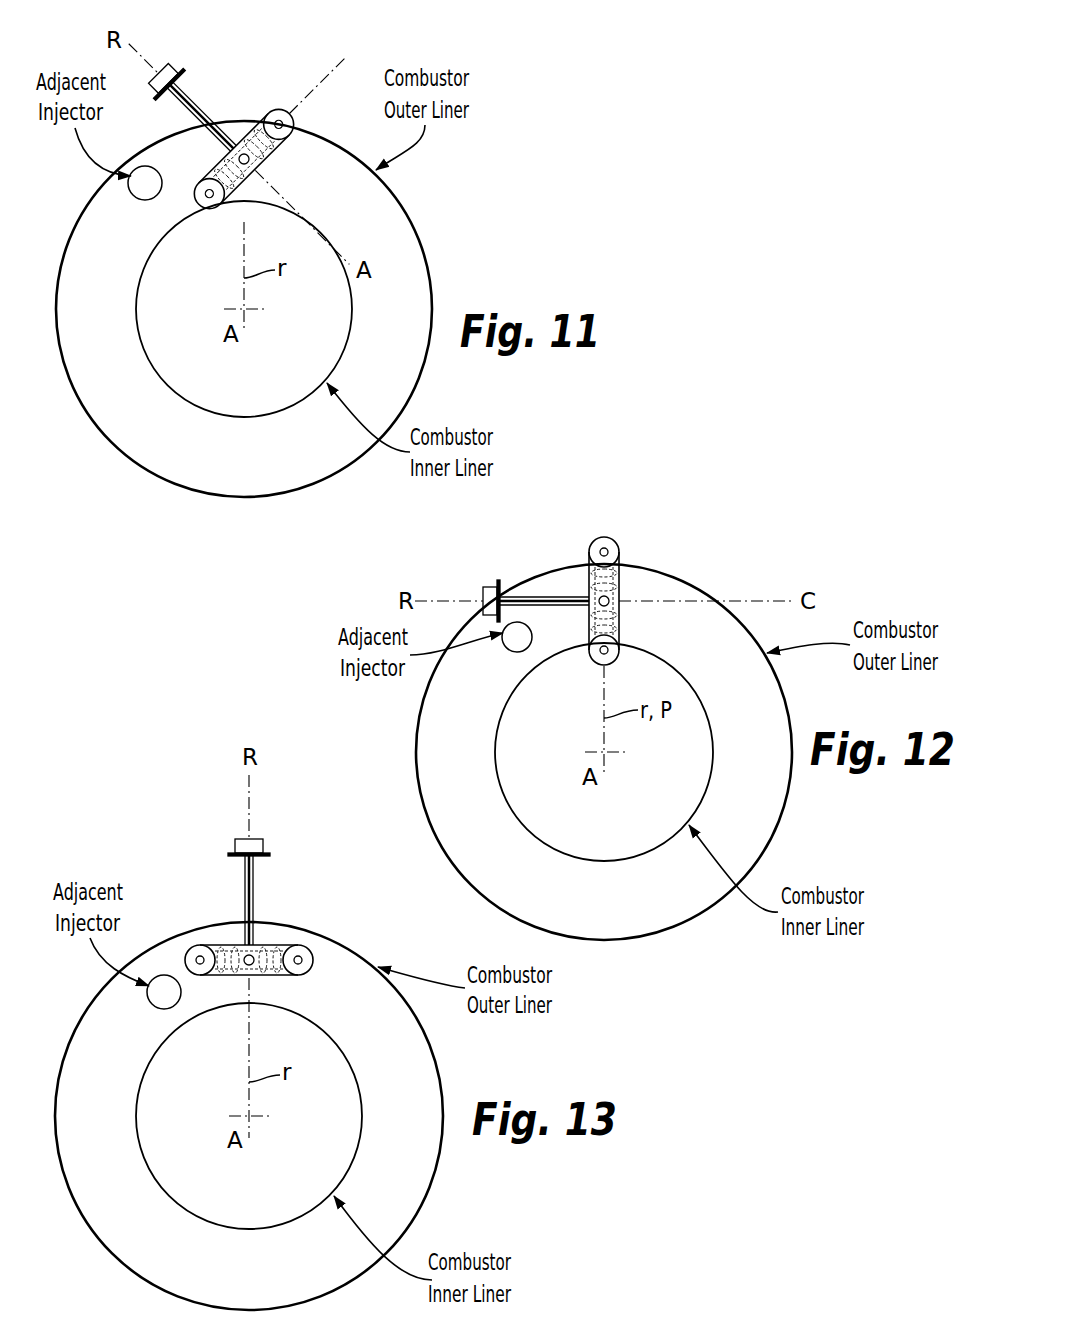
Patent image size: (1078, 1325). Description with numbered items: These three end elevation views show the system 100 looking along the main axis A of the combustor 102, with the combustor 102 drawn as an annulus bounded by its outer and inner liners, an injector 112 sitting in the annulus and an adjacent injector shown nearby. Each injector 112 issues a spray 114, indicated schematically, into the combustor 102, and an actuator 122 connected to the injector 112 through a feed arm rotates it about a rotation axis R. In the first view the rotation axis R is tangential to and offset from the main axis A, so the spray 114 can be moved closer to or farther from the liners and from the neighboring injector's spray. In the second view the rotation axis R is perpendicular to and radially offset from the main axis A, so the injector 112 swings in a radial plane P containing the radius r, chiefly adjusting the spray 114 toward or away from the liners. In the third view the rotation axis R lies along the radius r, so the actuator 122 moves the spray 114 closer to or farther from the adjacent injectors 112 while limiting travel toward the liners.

In FIG. 11, the system 100 is at (303, 264).
In FIG. 12, the system 100 is at (814, 543).
In FIG. 11, the combustor 102 is at (409, 216).
In FIG. 11, the injector 112 is at (266, 155).
In FIG. 12, the injector 112 is at (575, 562).
In FIG. 11, the spray 114 is at (203, 97).
In FIG. 12, the spray 114 is at (587, 540).
In FIG. 13, the spray 114 is at (256, 921).
In FIG. 11, the actuator 122 is at (165, 80).
In FIG. 12, the actuator 122 is at (491, 601).
In FIG. 13, the actuator 122 is at (217, 838).